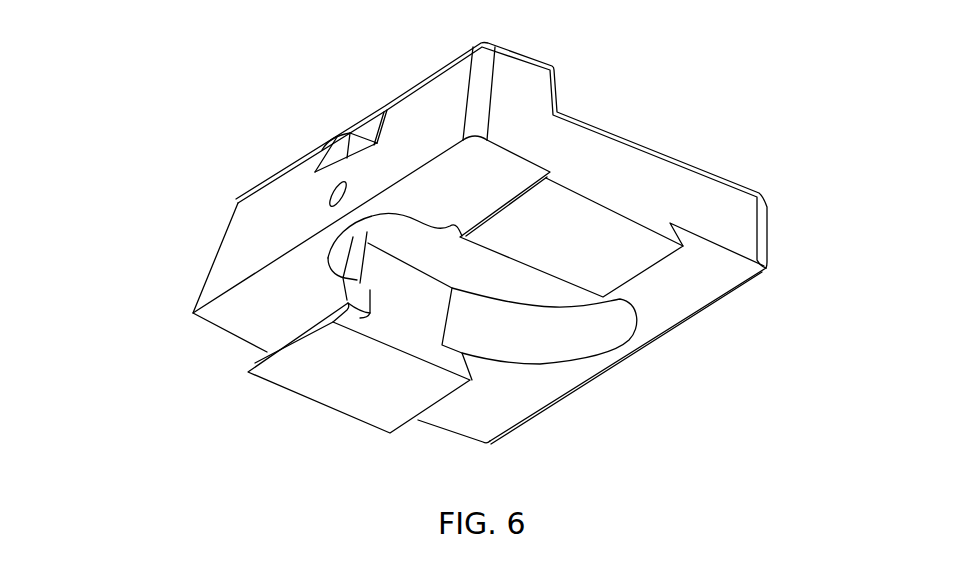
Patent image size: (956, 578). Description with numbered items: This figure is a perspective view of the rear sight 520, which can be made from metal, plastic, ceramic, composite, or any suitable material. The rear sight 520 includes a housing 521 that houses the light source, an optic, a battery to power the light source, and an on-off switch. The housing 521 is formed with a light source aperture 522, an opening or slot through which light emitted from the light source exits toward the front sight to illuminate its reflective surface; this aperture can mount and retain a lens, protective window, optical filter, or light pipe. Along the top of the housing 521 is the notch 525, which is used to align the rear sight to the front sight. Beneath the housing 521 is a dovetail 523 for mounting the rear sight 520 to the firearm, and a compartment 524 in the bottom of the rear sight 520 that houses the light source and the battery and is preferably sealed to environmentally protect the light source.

The rear sight 520 is at (104, 38).
The housing 521 is at (660, 188).
The light source aperture 522 is at (330, 196).
The dovetail 523 is at (317, 382).
The compartment 524 is at (572, 325).
The notch 525 is at (355, 116).